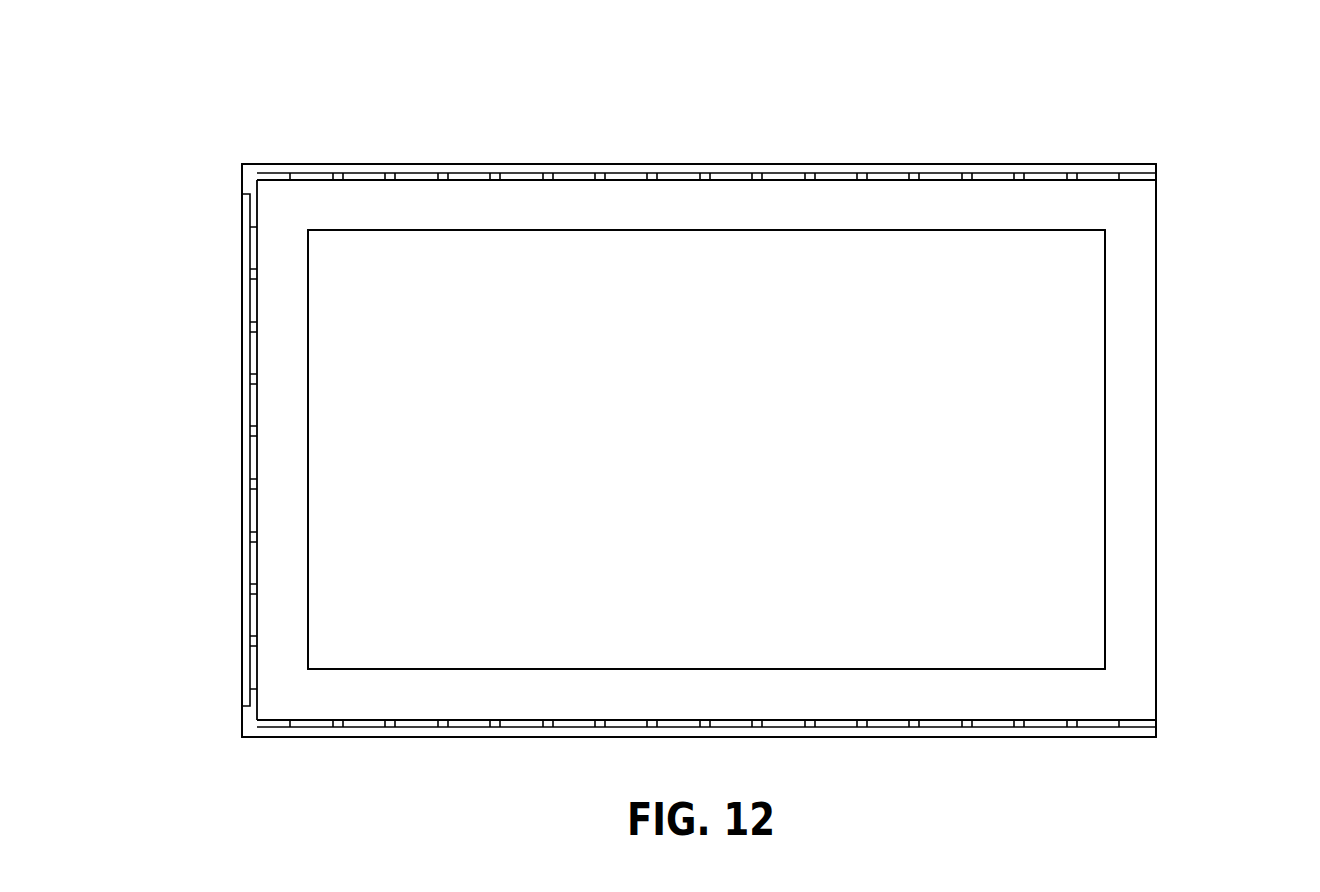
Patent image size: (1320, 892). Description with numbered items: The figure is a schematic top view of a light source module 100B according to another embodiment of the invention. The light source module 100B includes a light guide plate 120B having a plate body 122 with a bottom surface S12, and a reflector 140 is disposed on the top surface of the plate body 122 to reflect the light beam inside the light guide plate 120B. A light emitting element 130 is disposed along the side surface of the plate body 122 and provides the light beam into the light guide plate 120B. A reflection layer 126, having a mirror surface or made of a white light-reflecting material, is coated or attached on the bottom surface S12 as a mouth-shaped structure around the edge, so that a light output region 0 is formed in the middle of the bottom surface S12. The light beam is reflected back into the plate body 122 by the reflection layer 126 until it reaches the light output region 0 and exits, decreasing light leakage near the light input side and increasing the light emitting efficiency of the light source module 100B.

The reflector 140 is at (250, 163).
The reflection layer 126 is at (287, 267).
The light emitting element 130 is at (245, 298).
The plate body 122 is at (694, 307).
The light guide plate 120B is at (1222, 340).
The light output region 0 is at (1118, 429).
The bottom surface S12 is at (1093, 562).
The light source module 100B is at (1312, 794).